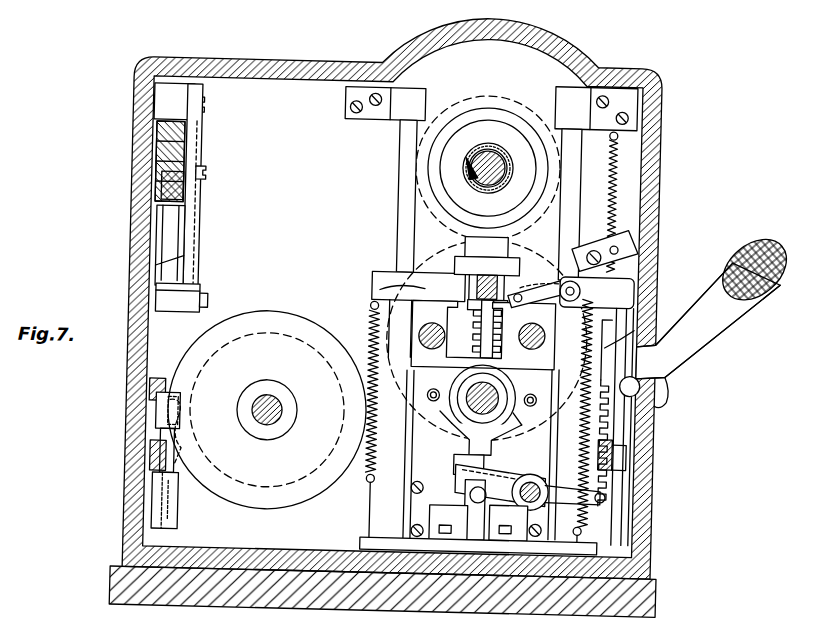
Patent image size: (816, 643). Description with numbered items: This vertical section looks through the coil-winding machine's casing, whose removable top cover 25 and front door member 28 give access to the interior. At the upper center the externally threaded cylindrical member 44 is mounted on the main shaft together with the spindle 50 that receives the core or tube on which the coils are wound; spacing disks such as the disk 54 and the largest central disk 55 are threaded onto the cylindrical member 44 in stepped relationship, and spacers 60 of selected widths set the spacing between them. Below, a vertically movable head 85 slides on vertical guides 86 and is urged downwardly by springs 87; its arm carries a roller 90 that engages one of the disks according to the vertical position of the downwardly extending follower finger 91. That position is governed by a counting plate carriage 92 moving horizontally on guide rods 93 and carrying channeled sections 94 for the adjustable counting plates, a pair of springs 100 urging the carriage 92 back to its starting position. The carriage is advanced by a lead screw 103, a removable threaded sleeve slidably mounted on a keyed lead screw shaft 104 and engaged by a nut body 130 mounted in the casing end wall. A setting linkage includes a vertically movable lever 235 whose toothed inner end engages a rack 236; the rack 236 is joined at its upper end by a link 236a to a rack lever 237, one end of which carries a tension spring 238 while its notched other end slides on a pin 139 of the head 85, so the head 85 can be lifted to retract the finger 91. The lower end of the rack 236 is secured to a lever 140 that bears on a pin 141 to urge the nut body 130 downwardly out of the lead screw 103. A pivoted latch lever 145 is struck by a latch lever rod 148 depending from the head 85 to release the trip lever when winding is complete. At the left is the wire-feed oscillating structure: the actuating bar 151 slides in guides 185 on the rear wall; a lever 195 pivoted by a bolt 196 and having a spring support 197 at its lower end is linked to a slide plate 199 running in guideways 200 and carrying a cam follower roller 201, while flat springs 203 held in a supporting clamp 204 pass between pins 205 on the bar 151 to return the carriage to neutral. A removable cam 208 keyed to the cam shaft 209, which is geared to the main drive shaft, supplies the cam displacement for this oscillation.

The top cover 25 is at (318, 78).
The front door member 28 is at (658, 206).
The cylindrical member 44 is at (466, 160).
The spindle 50 is at (490, 176).
The spacing disk 54 is at (487, 110).
The central disk 55 is at (476, 94).
The spacers 60 is at (468, 172).
The vertically movable head 85 is at (383, 287).
The guides 86 is at (395, 195).
The springs 87 is at (376, 498).
The roller 90 is at (463, 245).
The follower finger 91 is at (483, 336).
The counting plate carriage 92 is at (528, 380).
The guide rods 93 is at (386, 345).
The channeled sections 94 is at (469, 304).
The springs 100 is at (484, 405).
The lead screw 103 is at (459, 385).
The lead screw shaft 104 is at (472, 410).
The nut body 130 is at (518, 429).
The pin 139 is at (521, 279).
The lever 140 is at (610, 499).
The pin 141 is at (474, 492).
The latch lever 145 is at (617, 453).
The latch lever rod 148 is at (632, 422).
The actuating bar 151 is at (152, 189).
The guides 185 is at (156, 159).
The lever 195 is at (156, 261).
The bolt 196 is at (201, 105).
The spring support 197 is at (157, 528).
The slide plate 199 is at (151, 398).
The guideways 200 is at (153, 454).
The cam follower roller 201 is at (188, 410).
The flat springs 203 is at (197, 227).
The supporting clamp 204 is at (191, 295).
The pins 205 is at (204, 175).
The cam 208 is at (268, 325).
The cam shaft 209 is at (280, 423).
The lever 235 is at (683, 351).
The rack 236 is at (605, 343).
The link 236a is at (661, 266).
The rack lever 237 is at (638, 244).
The tension spring 238 is at (615, 171).